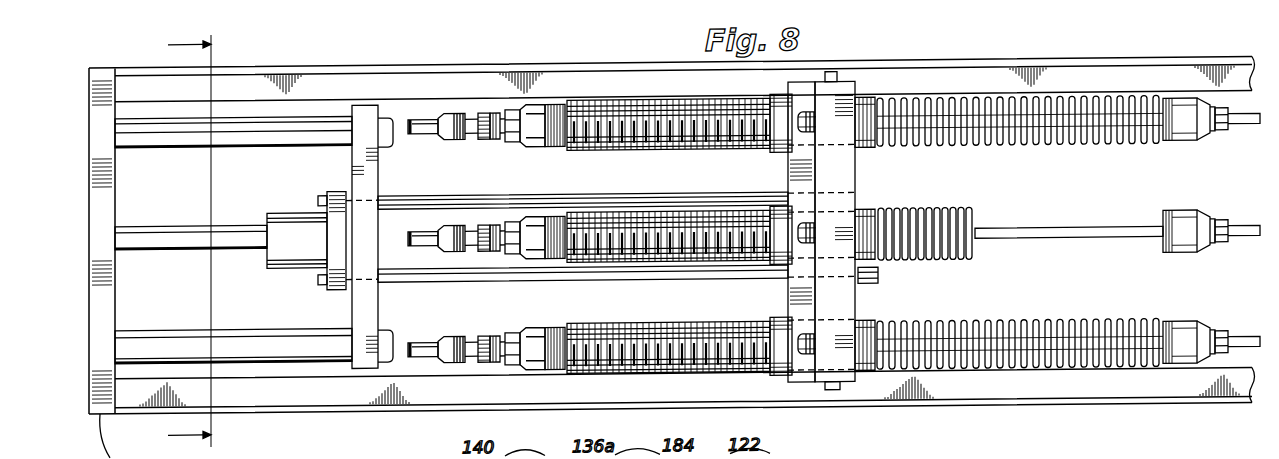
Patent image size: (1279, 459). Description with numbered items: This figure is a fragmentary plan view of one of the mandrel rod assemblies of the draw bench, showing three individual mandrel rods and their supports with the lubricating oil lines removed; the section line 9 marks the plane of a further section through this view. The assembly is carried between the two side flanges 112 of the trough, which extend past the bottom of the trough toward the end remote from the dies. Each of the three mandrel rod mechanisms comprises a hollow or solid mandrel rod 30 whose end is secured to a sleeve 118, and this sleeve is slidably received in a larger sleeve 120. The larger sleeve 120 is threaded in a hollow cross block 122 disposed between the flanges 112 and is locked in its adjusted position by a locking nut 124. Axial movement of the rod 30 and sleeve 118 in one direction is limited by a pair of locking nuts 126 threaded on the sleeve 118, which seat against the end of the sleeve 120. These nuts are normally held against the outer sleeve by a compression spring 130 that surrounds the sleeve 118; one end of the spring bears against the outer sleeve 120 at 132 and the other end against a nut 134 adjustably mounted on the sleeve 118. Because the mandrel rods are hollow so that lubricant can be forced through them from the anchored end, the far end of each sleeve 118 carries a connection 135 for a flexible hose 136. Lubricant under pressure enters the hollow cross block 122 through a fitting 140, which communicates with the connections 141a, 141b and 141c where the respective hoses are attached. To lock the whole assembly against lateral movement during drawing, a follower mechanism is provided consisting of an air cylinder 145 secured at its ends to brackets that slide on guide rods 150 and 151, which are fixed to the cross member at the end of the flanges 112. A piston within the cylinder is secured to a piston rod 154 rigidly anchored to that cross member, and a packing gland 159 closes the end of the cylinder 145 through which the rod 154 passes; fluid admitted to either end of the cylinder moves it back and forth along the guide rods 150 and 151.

The section line 9— 9 is at (178, 241).
The mandrel rod 30 is at (1248, 138).
The trough flanges 112 is at (350, 77).
The sleeve 118 is at (1090, 147).
The larger sleeve 120 is at (593, 106).
The cross block 122 is at (847, 123).
The locking nut 124 is at (782, 140).
The locking nuts 126 is at (560, 336).
The compression spring 130 is at (955, 110).
The spring seat 132 is at (870, 330).
The nut 134 is at (1180, 155).
The connection 135 is at (490, 117).
The flexible hose 136 is at (421, 128).
The fitting 140 is at (833, 85).
The connection 141a is at (803, 122).
The connection 141b is at (809, 254).
The connection 141c is at (810, 364).
The air cylinder 145 is at (520, 205).
The guide rod 150 is at (268, 341).
The guide rod 151 is at (280, 141).
The piston rod 154 is at (162, 230).
The packing gland 159 is at (290, 224).